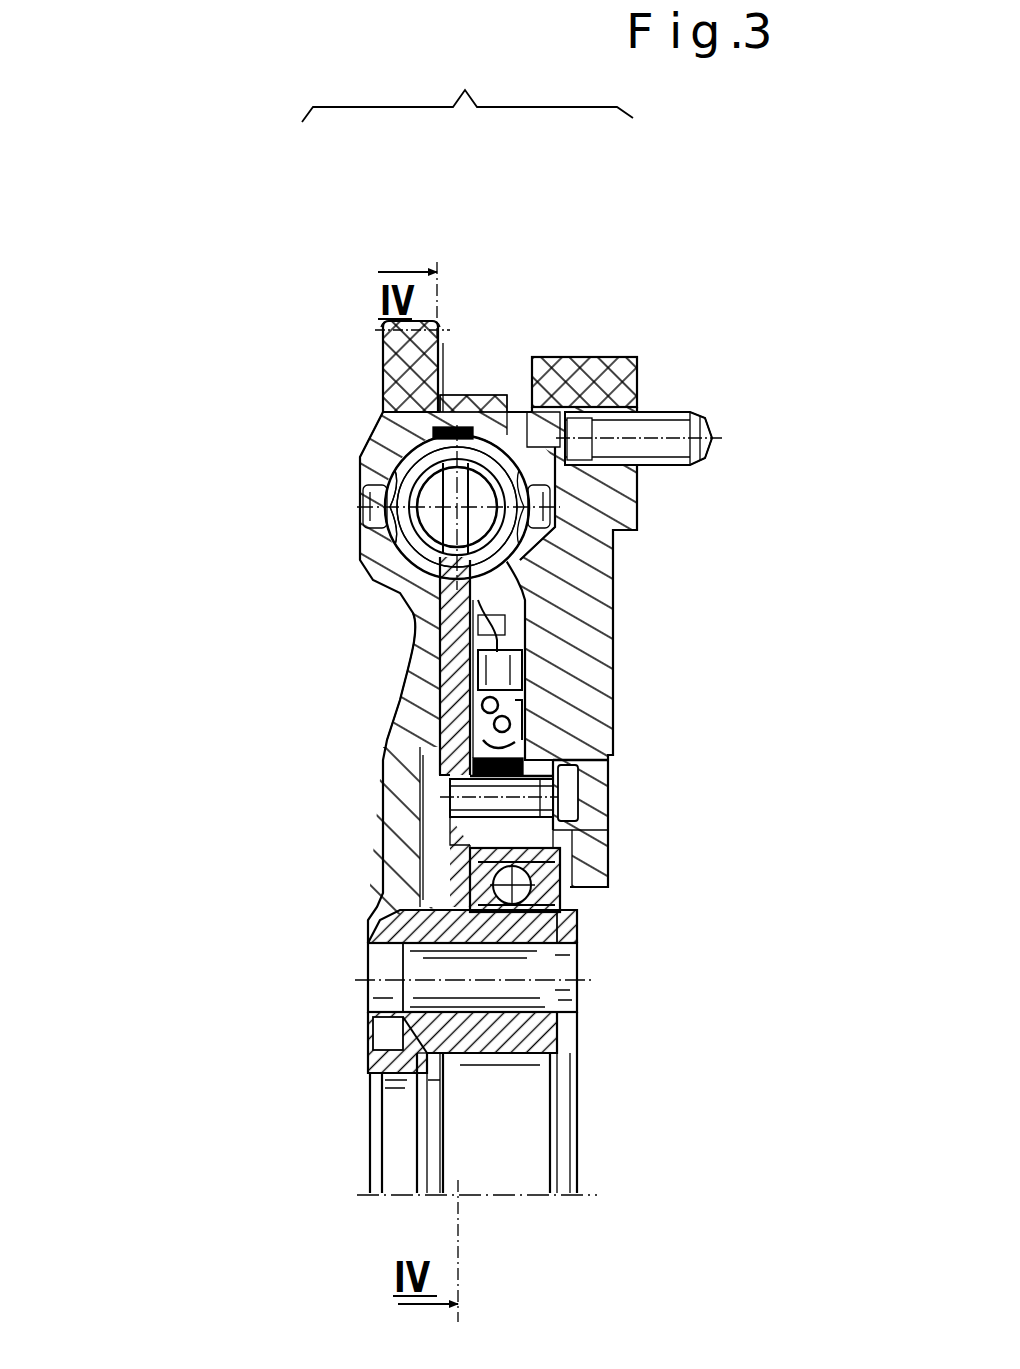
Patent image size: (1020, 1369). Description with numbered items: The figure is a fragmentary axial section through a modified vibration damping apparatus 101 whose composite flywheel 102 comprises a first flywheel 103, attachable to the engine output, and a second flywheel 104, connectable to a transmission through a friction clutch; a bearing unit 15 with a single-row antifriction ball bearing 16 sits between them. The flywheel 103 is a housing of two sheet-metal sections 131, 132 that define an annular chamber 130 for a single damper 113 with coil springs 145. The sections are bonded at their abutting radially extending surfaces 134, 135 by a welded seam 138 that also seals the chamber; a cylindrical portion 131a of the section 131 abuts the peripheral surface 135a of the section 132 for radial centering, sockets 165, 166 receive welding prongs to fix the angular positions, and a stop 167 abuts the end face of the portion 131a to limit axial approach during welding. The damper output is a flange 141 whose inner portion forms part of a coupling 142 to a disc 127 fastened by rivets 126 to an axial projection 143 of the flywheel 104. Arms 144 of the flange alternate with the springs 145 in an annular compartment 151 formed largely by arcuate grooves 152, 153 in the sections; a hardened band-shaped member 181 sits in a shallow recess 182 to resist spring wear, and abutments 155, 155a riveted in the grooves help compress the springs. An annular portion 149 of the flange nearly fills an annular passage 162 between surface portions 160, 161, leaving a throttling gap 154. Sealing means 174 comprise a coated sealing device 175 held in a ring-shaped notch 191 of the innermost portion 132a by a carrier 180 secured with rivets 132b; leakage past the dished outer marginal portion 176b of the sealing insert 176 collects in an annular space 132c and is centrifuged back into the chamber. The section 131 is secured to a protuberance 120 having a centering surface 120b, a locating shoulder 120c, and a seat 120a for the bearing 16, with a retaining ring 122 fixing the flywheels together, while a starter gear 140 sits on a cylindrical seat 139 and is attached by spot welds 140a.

The vibration damping apparatus 101 is at (163, 82).
The composite flywheel 102 is at (467, 85).
The first flywheel 103 is at (303, 677).
The second flywheel 104 is at (682, 429).
The damper 113 is at (230, 423).
The protuberance 120 is at (511, 1170).
The cylindrical seat 120a is at (706, 1022).
The cylindrical centering surface 120b is at (303, 1195).
The locating shoulder 120c is at (479, 1188).
The retaining ring 122 is at (591, 1080).
The rivets 126 is at (277, 854).
The disc 127 is at (279, 908).
The annular chamber 130 is at (268, 788).
The section 131 is at (320, 678).
The cylindrical portion 131a is at (493, 369).
The section 132 is at (652, 647).
The radially innermost portion 132a is at (696, 784).
The rivets 132b is at (679, 701).
The annular space 132c is at (690, 842).
The annular surface 134 is at (506, 285).
The annular surface 135 is at (473, 403).
The cylindrical peripheral surface 135a is at (607, 324).
The welded seam 138 is at (447, 310).
The cylindrical seat 139 is at (327, 351).
The starter gear 140 is at (301, 311).
The spot welds 140a is at (224, 383).
The flange 141 is at (252, 656).
The coupling 142 is at (262, 699).
The axial projection 143 is at (568, 902).
The arms 144 is at (670, 322).
The coil springs 145 is at (670, 296).
The annular portion 149 is at (292, 565).
The annular compartment 151 is at (298, 465).
The arcuate groove 152 is at (304, 451).
The arcuate groove 153 is at (723, 372).
The throttling gap 154 is at (711, 495).
The abutment 155 is at (238, 473).
The abutment 155a is at (744, 403).
The annular surface portion 160 is at (301, 606).
The annular surface portion 161 is at (664, 527).
The annular passage 162 is at (272, 606).
The sockets 165 is at (297, 658).
The sockets 166 is at (640, 679).
The stop 167 is at (559, 300).
The sealing means 174 is at (637, 746).
The sealing device 175 is at (689, 882).
The sealing device 176 is at (386, 810).
The outer marginal portion 176b is at (693, 911).
The carrier 180 is at (683, 807).
The band-shaped member 181 is at (375, 266).
The recess 182 is at (405, 287).
The ring-shaped notch 191 is at (663, 711).
The bearing unit 15 is at (681, 983).
The antifriction ball bearing 16 is at (348, 964).